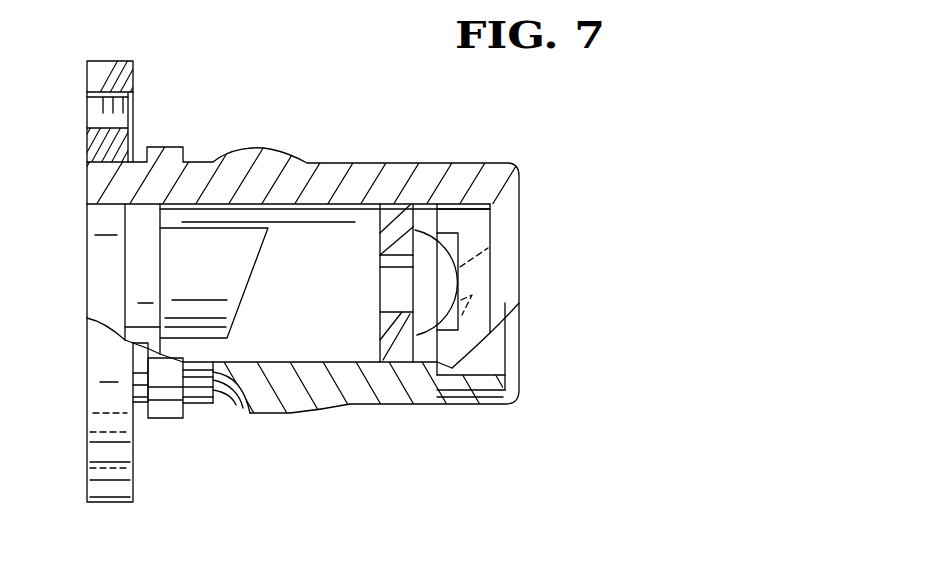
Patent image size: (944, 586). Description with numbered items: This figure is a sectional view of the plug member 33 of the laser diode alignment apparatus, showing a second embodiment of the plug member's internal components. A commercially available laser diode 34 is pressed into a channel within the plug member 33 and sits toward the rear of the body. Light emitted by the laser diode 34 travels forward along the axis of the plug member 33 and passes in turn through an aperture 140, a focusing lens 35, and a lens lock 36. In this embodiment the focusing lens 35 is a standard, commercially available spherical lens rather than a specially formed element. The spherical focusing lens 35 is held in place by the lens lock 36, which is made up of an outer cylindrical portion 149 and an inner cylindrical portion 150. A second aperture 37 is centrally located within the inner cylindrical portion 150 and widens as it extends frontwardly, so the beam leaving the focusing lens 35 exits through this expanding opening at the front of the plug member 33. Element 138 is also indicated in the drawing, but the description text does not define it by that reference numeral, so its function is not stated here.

The plug member 33 is at (498, 470).
The laser diode 34 is at (193, 278).
The focusing lens 35 is at (427, 312).
The lens lock 36 is at (492, 232).
The aperture 37 is at (472, 296).
The chamber 138 is at (329, 238).
The aperture 140 is at (395, 295).
The outer cylindrical portion 149 is at (472, 228).
The inner cylindrical portion 150 is at (463, 343).